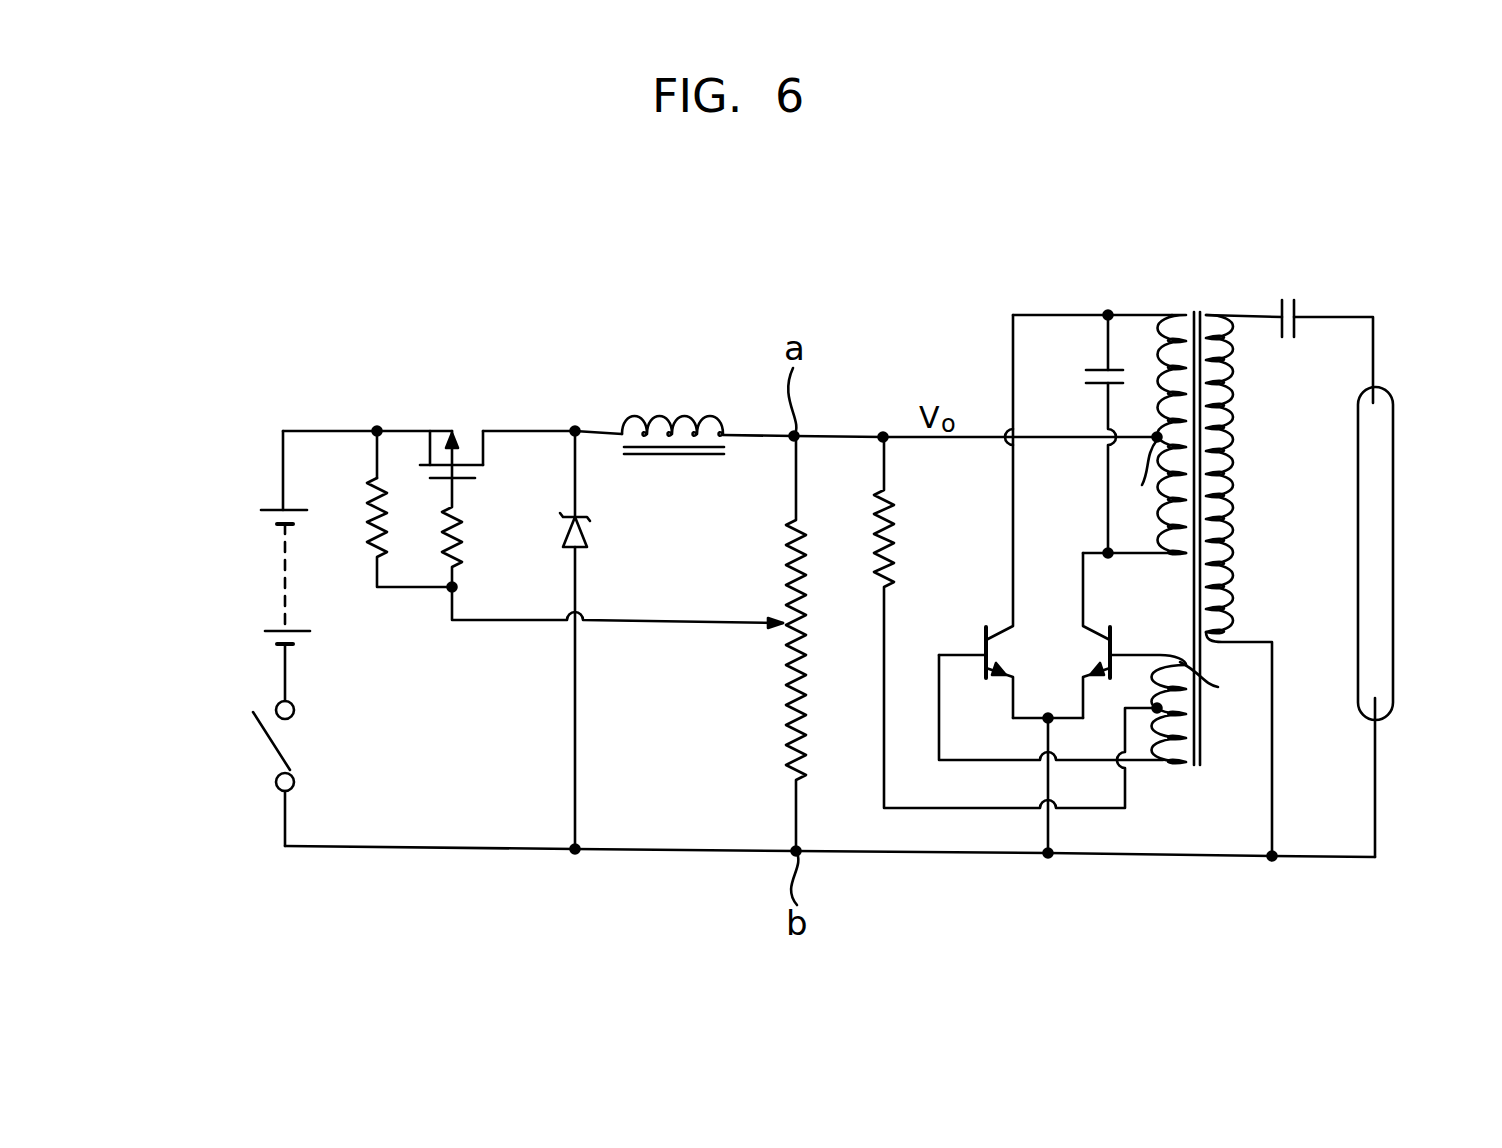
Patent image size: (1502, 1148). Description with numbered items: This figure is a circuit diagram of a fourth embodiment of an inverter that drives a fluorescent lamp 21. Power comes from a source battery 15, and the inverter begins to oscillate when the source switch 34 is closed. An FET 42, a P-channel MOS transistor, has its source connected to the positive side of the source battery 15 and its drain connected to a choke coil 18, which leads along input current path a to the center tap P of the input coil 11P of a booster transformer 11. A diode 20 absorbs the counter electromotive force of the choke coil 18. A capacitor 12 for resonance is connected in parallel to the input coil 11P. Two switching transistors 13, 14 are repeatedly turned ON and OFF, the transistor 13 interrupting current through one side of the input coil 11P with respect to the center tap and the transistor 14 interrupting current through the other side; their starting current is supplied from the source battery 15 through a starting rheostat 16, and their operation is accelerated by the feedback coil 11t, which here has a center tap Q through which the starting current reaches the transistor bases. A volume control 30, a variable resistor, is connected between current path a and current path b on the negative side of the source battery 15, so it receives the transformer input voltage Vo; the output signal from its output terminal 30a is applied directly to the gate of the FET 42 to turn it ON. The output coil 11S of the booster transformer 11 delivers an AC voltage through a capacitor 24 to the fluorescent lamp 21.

The source battery 15 is at (278, 585).
The source switch 34 is at (275, 752).
The FET 42 is at (436, 430).
The choke coil 18 is at (673, 418).
The diode 20 is at (590, 518).
The volume control 30 is at (790, 590).
The output terminal 30a is at (715, 628).
The starting rheostat 16 is at (890, 550).
The transistor 13 is at (1005, 636).
The transistor 14 is at (1098, 642).
The capacitor 12 is at (1090, 380).
The booster transformer 11 is at (1196, 310).
The input coil 11P is at (1163, 360).
The output coil 11S is at (1232, 430).
The tertiary winding 11t is at (1163, 765).
The capacitor 24 is at (1283, 298).
The fluorescent lamp 21 is at (1395, 500).